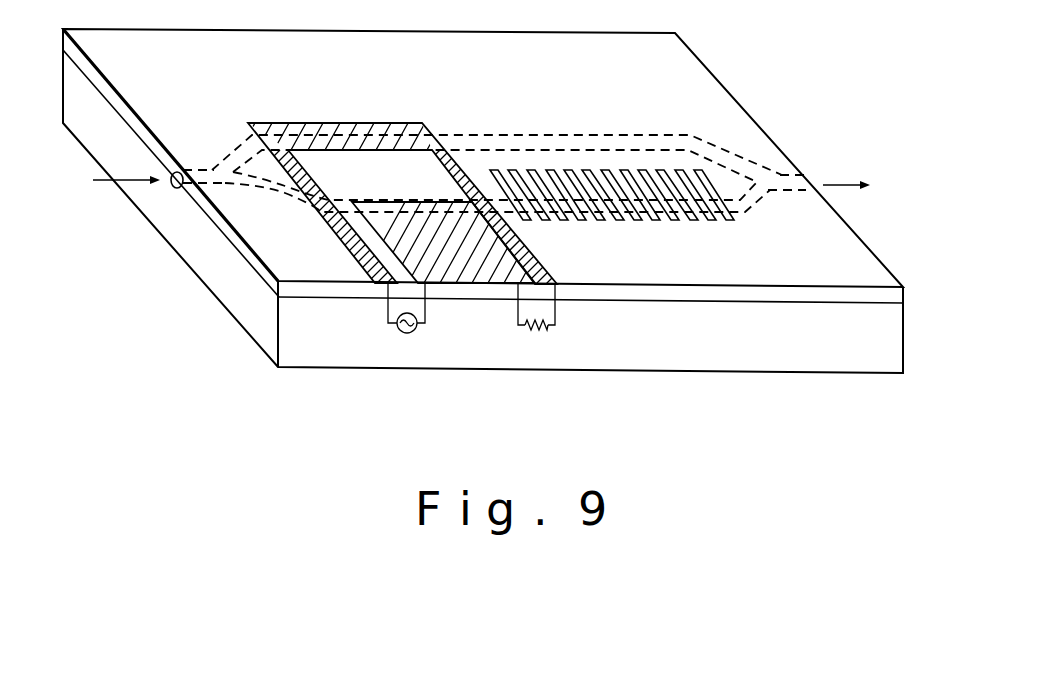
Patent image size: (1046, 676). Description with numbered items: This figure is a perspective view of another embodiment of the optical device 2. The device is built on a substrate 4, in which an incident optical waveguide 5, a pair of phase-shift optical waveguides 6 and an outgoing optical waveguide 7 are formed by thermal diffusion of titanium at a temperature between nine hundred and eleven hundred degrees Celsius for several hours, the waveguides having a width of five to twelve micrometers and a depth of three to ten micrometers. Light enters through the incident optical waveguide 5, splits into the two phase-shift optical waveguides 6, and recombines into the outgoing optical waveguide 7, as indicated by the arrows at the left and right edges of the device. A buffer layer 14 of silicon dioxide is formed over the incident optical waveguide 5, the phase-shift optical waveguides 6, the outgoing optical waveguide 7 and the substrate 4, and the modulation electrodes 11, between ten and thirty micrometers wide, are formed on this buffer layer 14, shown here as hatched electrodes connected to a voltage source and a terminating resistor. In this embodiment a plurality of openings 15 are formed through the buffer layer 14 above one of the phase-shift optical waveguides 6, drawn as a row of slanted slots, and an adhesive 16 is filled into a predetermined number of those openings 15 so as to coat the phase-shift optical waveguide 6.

The optical device 2 is at (752, 60).
The substrate 4 is at (783, 348).
The incident optical waveguide 5 is at (202, 169).
The phase-shift optical waveguides 6 is at (493, 137).
The outgoing optical waveguide 7 is at (785, 174).
The modulation electrodes 11 is at (318, 123).
The buffer layer 14 is at (877, 293).
The openings 15 is at (662, 170).
The adhesive 16 is at (568, 170).